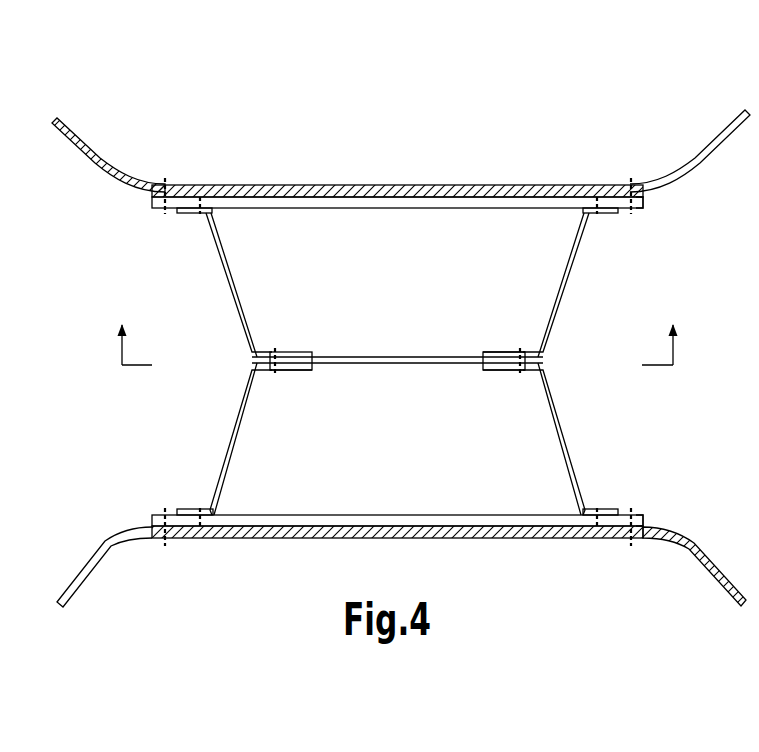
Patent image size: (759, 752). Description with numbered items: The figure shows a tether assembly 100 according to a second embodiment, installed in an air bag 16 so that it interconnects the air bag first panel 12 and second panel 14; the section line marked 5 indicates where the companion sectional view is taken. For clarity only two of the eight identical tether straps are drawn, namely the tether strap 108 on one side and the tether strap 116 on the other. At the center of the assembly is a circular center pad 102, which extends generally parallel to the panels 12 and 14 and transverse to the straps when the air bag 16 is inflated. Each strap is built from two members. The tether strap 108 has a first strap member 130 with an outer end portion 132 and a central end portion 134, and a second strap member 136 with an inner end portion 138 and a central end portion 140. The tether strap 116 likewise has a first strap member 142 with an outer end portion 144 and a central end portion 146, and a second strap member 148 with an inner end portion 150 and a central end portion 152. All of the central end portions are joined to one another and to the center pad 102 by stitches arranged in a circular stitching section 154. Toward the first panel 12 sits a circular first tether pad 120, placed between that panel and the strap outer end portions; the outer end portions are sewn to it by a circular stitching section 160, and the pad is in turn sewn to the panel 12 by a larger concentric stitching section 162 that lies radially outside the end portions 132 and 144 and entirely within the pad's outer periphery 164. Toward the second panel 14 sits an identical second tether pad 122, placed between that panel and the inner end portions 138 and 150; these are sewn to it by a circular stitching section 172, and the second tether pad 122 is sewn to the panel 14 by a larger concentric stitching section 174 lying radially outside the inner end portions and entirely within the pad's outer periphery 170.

The tether assembly 100 is at (372, 130).
The air bag 16 is at (282, 158).
The first panel 12 is at (447, 183).
The second panel 14 is at (268, 540).
The first tether pad 120 is at (388, 209).
The second tether pad 122 is at (366, 512).
The center pad 102 is at (402, 354).
The tether strap 108 is at (568, 284).
The tether strap 116 is at (240, 322).
The first strap member 130 is at (553, 316).
The outer end portion 132 is at (620, 210).
The central end portion 134 is at (500, 352).
The second strap member 136 is at (560, 380).
The inner end portion 138 is at (620, 510).
The central end portion 140 is at (490, 372).
The first strap member 142 is at (257, 279).
The outer end portion 144 is at (178, 212).
The central end portion 146 is at (313, 352).
The second strap member 148 is at (242, 458).
The inner end portion 150 is at (178, 510).
The central end portion 152 is at (299, 372).
The stitching section 154 is at (290, 352).
The stitching section 160 is at (200, 213).
The stitching section 162 is at (164, 182).
The outer periphery 164 is at (646, 205).
The outer periphery 170 is at (646, 521).
The stitching section 172 is at (202, 510).
The stitching section 174 is at (165, 544).
The section line 5 is at (398, 330).